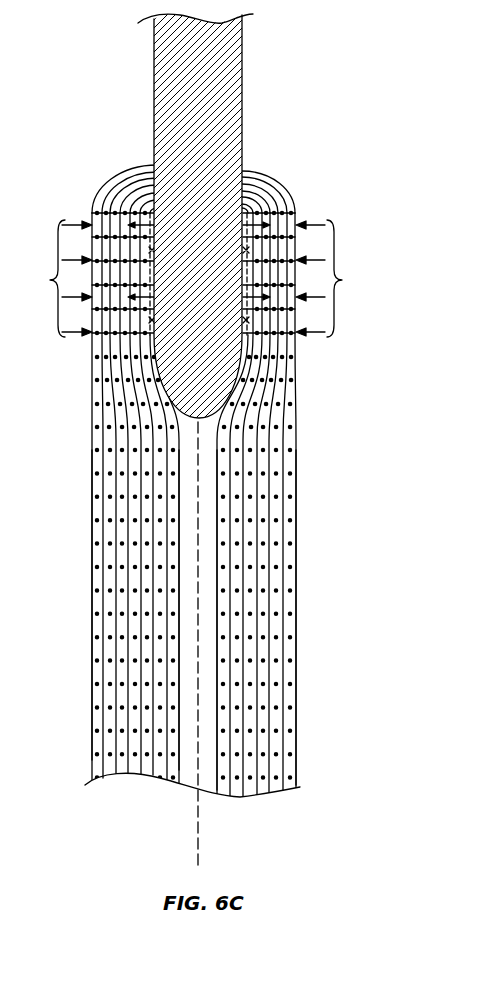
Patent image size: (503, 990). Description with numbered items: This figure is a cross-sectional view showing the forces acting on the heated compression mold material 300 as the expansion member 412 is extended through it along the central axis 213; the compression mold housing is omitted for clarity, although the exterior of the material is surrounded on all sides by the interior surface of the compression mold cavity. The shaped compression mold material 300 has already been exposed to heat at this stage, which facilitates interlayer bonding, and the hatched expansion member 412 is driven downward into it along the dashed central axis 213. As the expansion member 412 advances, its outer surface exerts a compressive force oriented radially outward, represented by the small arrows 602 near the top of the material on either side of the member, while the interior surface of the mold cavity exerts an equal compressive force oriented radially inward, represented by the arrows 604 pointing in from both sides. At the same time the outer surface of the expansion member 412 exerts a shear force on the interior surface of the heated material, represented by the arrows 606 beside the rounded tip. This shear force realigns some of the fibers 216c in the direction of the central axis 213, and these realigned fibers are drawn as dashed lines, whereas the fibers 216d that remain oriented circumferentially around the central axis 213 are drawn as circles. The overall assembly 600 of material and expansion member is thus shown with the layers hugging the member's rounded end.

The expansion member 412 is at (232, 88).
The arrows representing radially outward compressive force 602 is at (142, 222).
The arrows representing radially inward compressive force 604 is at (194, 278).
The arrows representing shear force 606 is at (150, 325).
The reinforced tube assembly 600 is at (150, 506).
The fibers realigned along the central axis 216c is at (150, 383).
The circumferentially oriented fibers 216d is at (100, 478).
The shaped compression mold material 300 is at (305, 662).
The central axis 213 is at (198, 830).